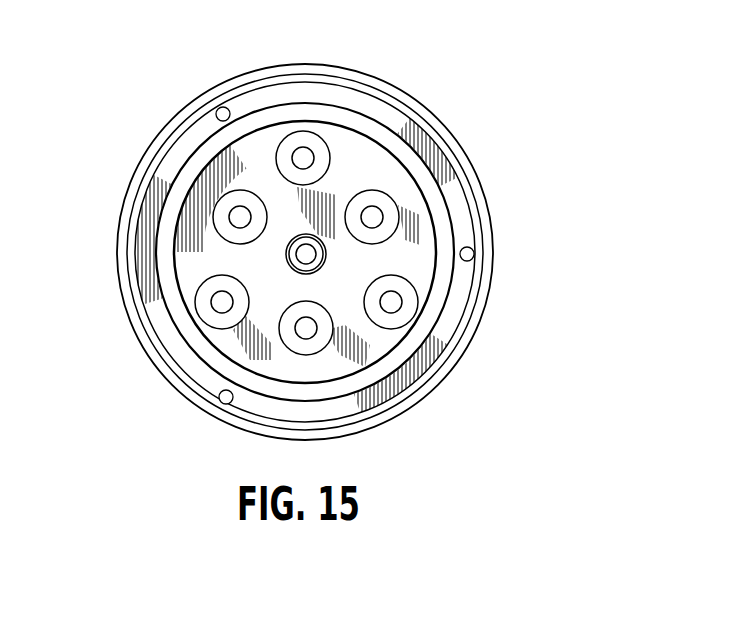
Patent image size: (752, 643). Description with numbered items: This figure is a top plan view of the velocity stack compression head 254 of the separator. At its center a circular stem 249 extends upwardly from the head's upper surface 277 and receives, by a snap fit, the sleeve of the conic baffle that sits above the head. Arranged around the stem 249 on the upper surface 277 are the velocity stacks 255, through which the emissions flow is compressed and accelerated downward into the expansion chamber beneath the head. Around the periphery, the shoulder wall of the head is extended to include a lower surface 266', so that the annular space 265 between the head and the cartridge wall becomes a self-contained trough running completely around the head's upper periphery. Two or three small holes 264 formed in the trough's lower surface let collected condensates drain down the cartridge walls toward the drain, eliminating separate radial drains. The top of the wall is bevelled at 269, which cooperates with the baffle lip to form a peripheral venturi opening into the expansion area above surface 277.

The circular stem 249 is at (286, 257).
The compression head 254 is at (355, 171).
The velocity stacks 255 is at (290, 132).
The small holes 264 is at (474, 253).
The annular space 265 is at (447, 173).
The lower surface 266' is at (373, 258).
The bevel 269 is at (443, 285).
The upper surface 277 is at (362, 335).